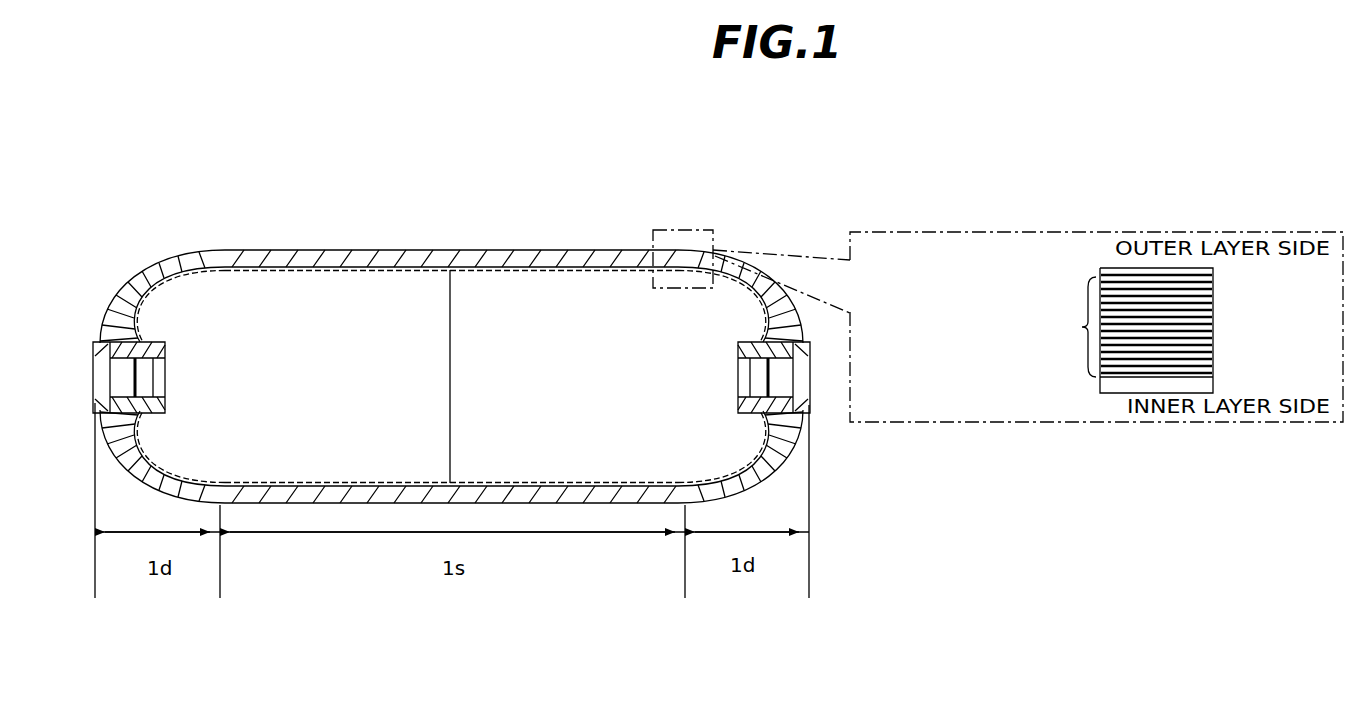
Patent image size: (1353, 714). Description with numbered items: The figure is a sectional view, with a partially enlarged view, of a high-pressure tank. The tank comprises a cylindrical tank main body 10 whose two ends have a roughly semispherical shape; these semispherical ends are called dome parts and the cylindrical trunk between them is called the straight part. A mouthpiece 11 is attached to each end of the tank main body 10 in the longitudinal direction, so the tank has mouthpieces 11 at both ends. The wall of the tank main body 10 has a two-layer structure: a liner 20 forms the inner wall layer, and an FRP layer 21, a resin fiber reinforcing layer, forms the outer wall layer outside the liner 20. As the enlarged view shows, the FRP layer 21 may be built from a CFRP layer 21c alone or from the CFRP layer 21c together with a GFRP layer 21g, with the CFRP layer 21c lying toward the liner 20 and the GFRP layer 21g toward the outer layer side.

The tank main body 10 is at (297, 248).
The mouthpiece 11 is at (147, 340).
The liner 20 is at (1082, 385).
The FRP layer 21 is at (1222, 268).
The GFRP layer 21g is at (423, 257).
The CFRP layer 21c is at (564, 257).